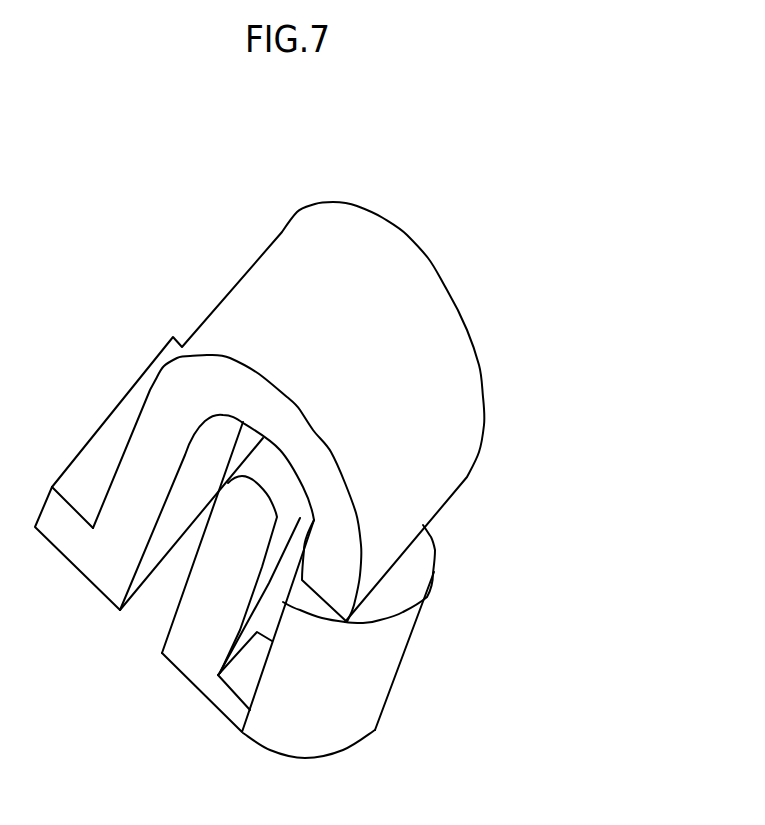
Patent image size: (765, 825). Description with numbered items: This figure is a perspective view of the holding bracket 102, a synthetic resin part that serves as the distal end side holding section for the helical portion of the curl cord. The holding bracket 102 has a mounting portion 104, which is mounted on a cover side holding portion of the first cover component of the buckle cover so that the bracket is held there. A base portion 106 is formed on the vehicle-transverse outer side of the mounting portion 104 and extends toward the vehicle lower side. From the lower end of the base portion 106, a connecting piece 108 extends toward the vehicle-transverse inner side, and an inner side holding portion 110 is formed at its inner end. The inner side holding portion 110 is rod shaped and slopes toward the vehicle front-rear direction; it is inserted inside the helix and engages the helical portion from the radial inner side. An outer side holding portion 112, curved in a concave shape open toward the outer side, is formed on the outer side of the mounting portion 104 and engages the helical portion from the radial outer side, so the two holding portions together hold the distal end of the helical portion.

The holding bracket 102 is at (522, 305).
The mounting portion 104 is at (372, 715).
The base portion 106 is at (247, 687).
The connecting piece 108 is at (178, 612).
The inner side holding portion 110 is at (278, 465).
The outer side holding portion 112 is at (398, 262).